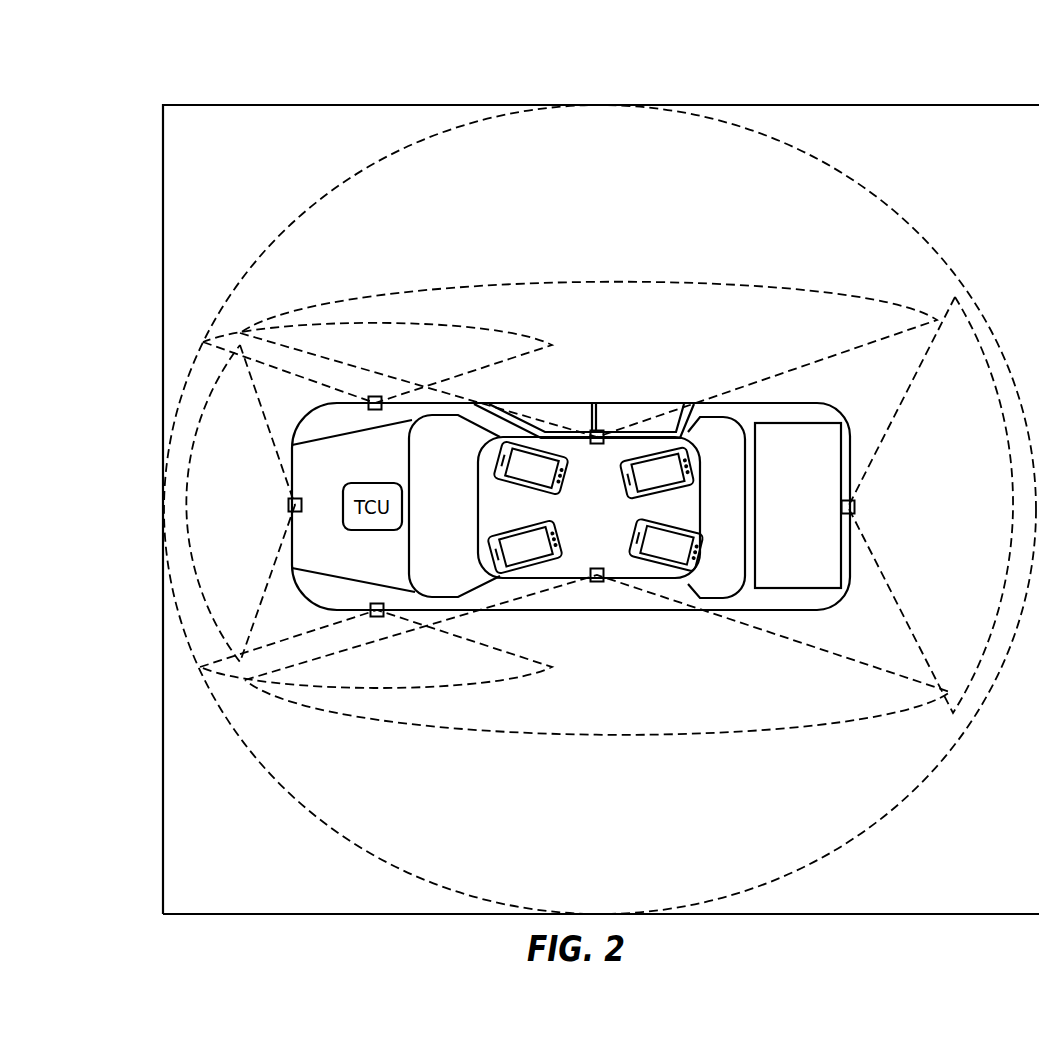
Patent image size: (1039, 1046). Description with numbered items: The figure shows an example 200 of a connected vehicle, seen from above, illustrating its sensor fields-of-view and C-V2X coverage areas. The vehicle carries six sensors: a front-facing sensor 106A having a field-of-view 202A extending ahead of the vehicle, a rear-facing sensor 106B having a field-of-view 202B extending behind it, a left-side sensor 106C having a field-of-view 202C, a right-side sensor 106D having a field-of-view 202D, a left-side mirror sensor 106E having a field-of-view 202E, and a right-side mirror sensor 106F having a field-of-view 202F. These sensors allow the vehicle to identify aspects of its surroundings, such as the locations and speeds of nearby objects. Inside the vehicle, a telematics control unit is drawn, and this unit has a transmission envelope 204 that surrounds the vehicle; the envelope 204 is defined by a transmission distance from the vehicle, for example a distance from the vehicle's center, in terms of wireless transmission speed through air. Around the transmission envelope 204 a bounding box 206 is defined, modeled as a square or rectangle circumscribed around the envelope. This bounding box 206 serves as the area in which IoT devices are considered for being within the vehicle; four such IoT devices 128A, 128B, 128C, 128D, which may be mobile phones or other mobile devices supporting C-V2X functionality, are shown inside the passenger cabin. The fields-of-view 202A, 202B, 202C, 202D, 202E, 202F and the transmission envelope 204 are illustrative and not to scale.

The example of a connected vehicle 200 is at (140, 67).
The transmission envelope 204 is at (585, 181).
The bounding box 206 is at (163, 185).
The field-of-view 202A is at (252, 473).
The field-of-view 202B is at (962, 473).
The field-of-view 202C is at (640, 689).
The field-of-view 202D is at (640, 361).
The field-of-view 202E is at (445, 675).
The field-of-view 202F is at (438, 358).
The front-facing sensor 106A is at (288, 508).
The rear-facing sensor 106B is at (855, 507).
The left-side sensor 106C is at (597, 567).
The right-side sensor 106D is at (598, 445).
The left-side mirror sensor 106E is at (370, 607).
The right-side mirror sensor 106F is at (369, 405).
The IoT device 128A is at (545, 557).
The IoT device 128B is at (550, 477).
The IoT device 128C is at (676, 484).
The IoT device 128D is at (685, 555).